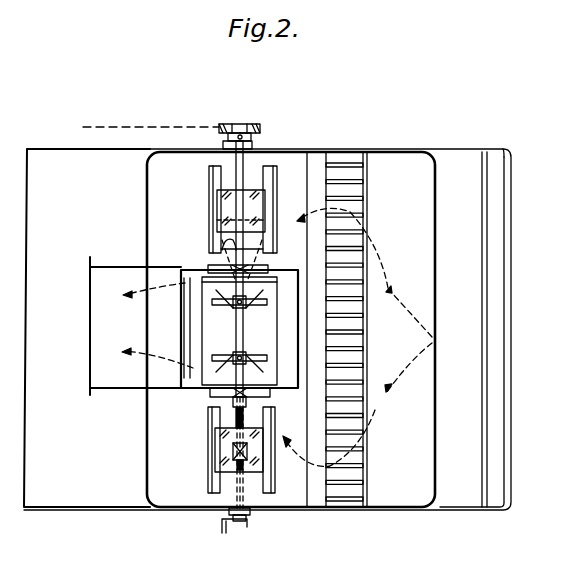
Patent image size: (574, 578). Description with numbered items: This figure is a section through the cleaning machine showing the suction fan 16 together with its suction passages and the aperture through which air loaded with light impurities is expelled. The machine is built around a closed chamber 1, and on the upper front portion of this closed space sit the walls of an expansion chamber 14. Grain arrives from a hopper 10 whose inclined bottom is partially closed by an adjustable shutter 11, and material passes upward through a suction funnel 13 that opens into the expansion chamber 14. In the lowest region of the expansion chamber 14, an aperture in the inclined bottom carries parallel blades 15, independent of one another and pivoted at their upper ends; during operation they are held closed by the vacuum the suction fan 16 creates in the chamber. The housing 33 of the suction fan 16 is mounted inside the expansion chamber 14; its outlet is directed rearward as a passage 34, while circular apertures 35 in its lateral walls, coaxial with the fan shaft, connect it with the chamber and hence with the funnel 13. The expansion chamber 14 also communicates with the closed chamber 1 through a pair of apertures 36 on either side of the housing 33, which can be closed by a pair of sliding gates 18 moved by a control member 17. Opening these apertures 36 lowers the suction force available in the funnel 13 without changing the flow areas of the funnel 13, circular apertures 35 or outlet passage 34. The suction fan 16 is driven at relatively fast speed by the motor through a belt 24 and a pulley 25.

The closed chamber 1 is at (87, 328).
The hopper 10 is at (505, 313).
The shutter 11 is at (470, 250).
The suction funnel 13 is at (364, 297).
The expansion chamber 14 is at (329, 430).
The parallel blades 15 is at (351, 389).
The suction-fan 16 is at (237, 324).
The control member 17 is at (243, 522).
The sliding gates 18 is at (218, 204).
The belt 24 is at (136, 127).
The pulley 25 is at (245, 128).
The fan housing 33 is at (297, 352).
The outlet passage 34 is at (141, 326).
The circular apertures 35 is at (215, 266).
The apertures 36 is at (224, 233).